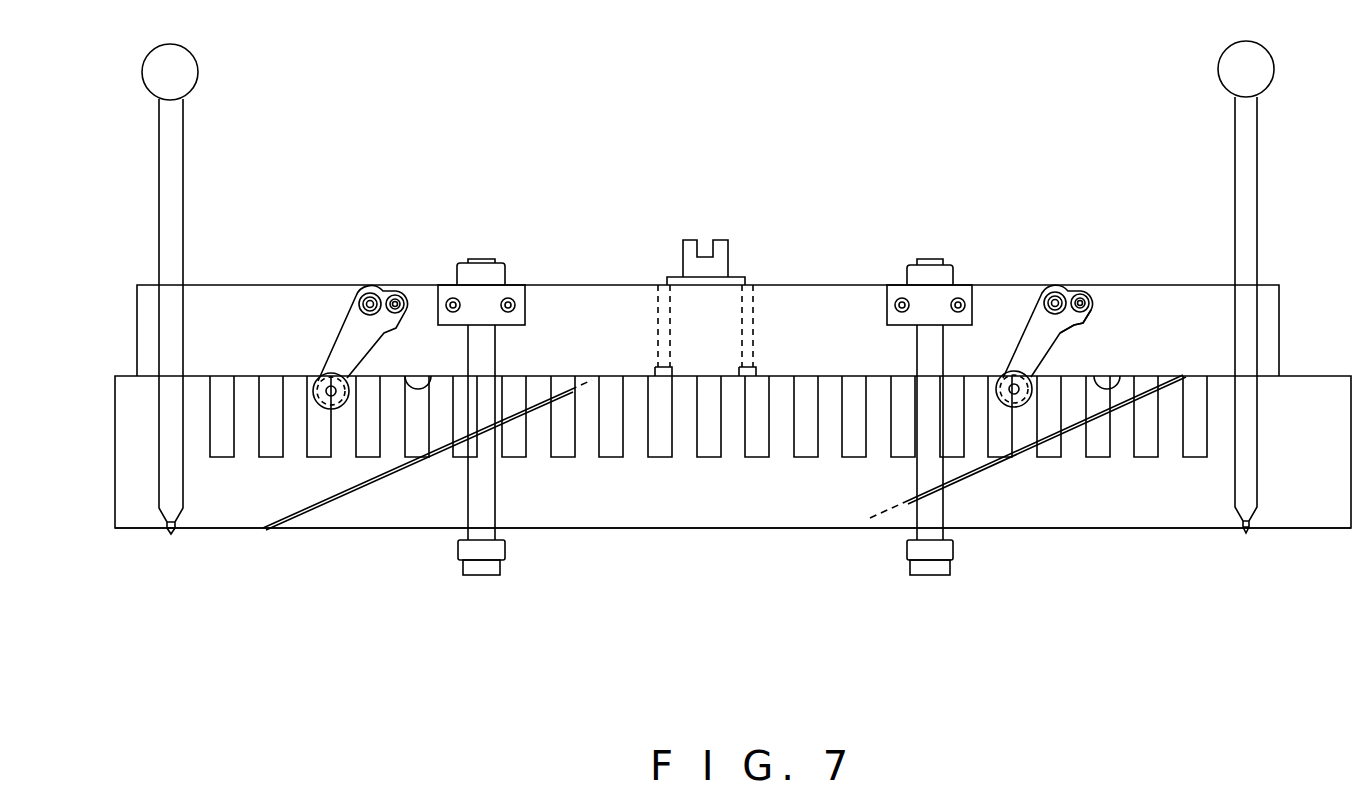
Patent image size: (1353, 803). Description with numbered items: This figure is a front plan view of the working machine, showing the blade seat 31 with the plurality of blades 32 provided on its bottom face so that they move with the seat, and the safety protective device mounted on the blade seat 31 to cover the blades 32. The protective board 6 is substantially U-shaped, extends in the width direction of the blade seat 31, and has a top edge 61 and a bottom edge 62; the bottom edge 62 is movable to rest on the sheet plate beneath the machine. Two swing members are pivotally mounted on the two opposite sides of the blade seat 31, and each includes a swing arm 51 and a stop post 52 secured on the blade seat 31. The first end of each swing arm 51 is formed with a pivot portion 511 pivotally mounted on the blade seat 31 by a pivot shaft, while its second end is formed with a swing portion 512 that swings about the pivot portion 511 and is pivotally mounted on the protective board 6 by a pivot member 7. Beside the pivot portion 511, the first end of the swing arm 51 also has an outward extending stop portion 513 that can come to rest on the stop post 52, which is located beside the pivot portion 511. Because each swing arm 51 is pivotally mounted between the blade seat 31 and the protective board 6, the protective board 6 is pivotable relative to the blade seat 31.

The protective board 6 is at (795, 548).
The top edge 61 is at (247, 376).
The bottom edge 62 is at (715, 530).
The blade seat 31 is at (803, 302).
The blades 32 is at (613, 450).
The swing arm 51 is at (348, 330).
The pivot portion 511 is at (1055, 292).
The swing portion 512 is at (1020, 405).
The stop portion 513 is at (1074, 325).
The stop post 52 is at (405, 297).
The pivot member 7 is at (320, 427).